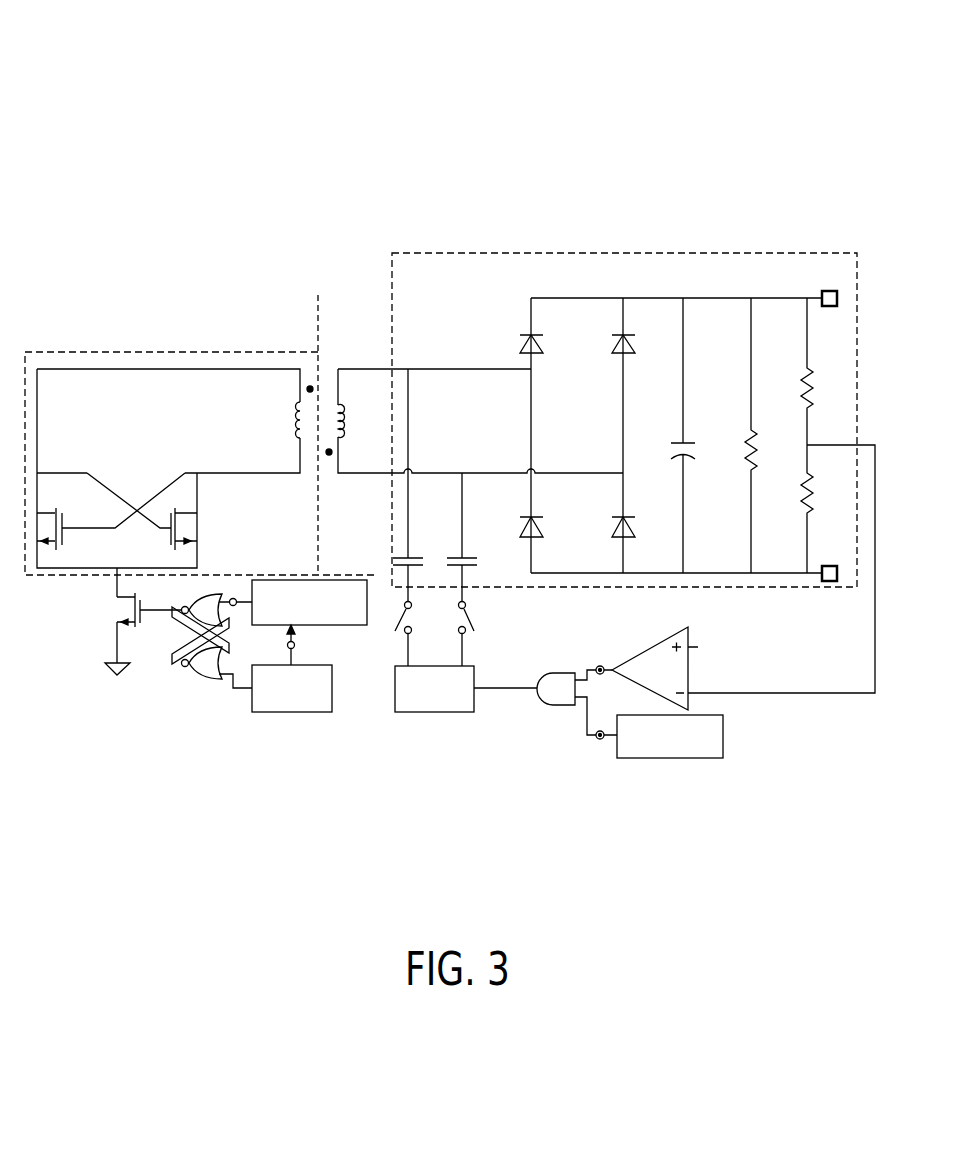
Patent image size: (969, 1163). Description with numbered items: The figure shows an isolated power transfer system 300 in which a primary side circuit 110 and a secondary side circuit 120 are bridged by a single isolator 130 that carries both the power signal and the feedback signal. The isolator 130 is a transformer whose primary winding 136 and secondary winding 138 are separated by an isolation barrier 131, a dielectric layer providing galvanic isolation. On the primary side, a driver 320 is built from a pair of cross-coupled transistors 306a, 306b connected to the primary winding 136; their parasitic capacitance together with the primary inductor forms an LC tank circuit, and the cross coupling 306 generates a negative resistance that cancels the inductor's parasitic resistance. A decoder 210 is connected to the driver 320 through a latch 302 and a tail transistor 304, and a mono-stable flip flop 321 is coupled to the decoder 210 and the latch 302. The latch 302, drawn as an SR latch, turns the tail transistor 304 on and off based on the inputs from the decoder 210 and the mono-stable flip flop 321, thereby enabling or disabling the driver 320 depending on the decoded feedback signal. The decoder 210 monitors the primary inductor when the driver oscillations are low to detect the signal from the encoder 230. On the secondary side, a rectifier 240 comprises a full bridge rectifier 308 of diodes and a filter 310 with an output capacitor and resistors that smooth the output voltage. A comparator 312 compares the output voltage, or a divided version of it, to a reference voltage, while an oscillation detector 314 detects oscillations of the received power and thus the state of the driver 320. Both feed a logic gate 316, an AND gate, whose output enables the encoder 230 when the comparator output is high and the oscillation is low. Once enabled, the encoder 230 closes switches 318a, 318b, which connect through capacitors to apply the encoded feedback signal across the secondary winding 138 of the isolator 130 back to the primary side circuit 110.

The isolated power transfer system 300 is at (310, 90).
The primary side circuit 110 is at (117, 128).
The secondary side circuit 120 is at (592, 120).
The isolator 130 is at (308, 375).
The isolation barrier 131 is at (326, 481).
The primary winding 136 is at (280, 385).
The secondary winding 138 is at (328, 375).
The driver 320 is at (110, 340).
The rectifier 240 is at (576, 243).
The full bridge rectifier 308 is at (512, 334).
The filter 310 is at (717, 290).
The cross coupling 306 is at (108, 492).
The cross-coupled transistor 306a is at (102, 565).
The cross-coupled transistor 306b is at (239, 541).
The tail transistor 304 is at (102, 625).
The latch 302 is at (173, 670).
The mono-stable flip flop 321 is at (262, 638).
The decoder 210 is at (292, 718).
The encoder 230 is at (443, 718).
The switch 318a is at (474, 638).
The switch 318b is at (391, 643).
The logic gate 316 is at (565, 710).
The comparator 312 is at (698, 703).
The oscillation detector 314 is at (667, 765).